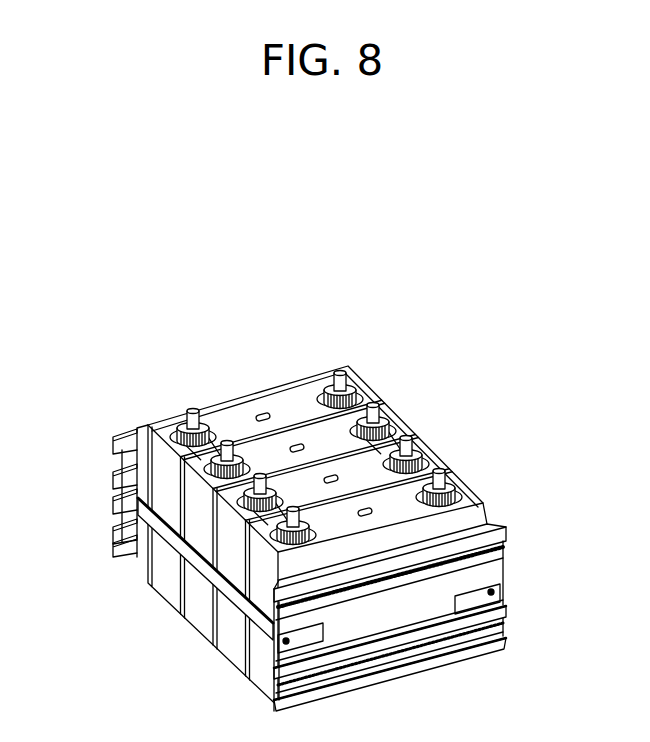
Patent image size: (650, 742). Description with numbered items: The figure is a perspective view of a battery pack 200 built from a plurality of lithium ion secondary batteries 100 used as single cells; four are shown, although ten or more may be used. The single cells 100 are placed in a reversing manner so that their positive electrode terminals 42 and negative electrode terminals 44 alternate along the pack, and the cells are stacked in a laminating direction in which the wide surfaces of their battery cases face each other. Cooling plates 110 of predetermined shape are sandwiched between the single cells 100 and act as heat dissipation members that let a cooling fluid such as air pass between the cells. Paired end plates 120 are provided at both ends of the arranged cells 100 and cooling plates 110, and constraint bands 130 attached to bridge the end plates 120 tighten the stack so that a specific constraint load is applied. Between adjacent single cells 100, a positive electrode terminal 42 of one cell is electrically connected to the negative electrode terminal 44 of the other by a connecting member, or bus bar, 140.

The positive electrode terminal 42 is at (192, 410).
The negative electrode terminal 44 is at (229, 445).
The lithium ion secondary battery 100 is at (292, 412).
The cooling plate 110 is at (145, 560).
The end plate 120 is at (120, 440).
The constraint band 130 is at (173, 538).
The connecting member (bus bar) 140 is at (172, 437).
The battery pack 200 is at (548, 327).